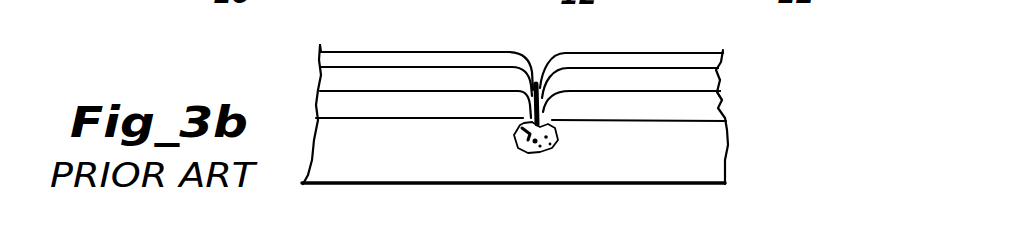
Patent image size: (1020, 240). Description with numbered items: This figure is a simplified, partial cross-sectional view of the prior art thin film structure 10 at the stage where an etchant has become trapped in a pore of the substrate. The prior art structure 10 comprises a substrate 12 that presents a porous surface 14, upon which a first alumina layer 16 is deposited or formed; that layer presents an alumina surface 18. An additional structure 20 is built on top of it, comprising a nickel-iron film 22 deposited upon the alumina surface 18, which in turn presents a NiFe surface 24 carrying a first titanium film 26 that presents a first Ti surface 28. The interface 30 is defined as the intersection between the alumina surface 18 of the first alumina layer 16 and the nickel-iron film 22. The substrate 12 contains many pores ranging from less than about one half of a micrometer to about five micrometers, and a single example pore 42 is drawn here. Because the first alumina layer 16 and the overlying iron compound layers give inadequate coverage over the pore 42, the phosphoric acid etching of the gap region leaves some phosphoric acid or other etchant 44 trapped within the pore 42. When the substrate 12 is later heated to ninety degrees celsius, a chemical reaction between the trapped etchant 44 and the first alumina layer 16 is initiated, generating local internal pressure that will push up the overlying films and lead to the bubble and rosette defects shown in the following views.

The prior art structure 10 is at (299, 147).
The substrate 12 is at (714, 155).
The porous surface 14 is at (728, 135).
The first alumina layer 16 is at (727, 113).
The alumina surface 18 is at (720, 104).
The additional structure 20 is at (297, 72).
The nickel-iron film 22 is at (720, 81).
The NiFe surface 24 is at (718, 68).
The first titanium film 26 is at (703, 62).
The first Ti surface 28 is at (697, 62).
The interface 30 is at (730, 92).
The pore 42 is at (537, 155).
The etchant 44 is at (515, 136).